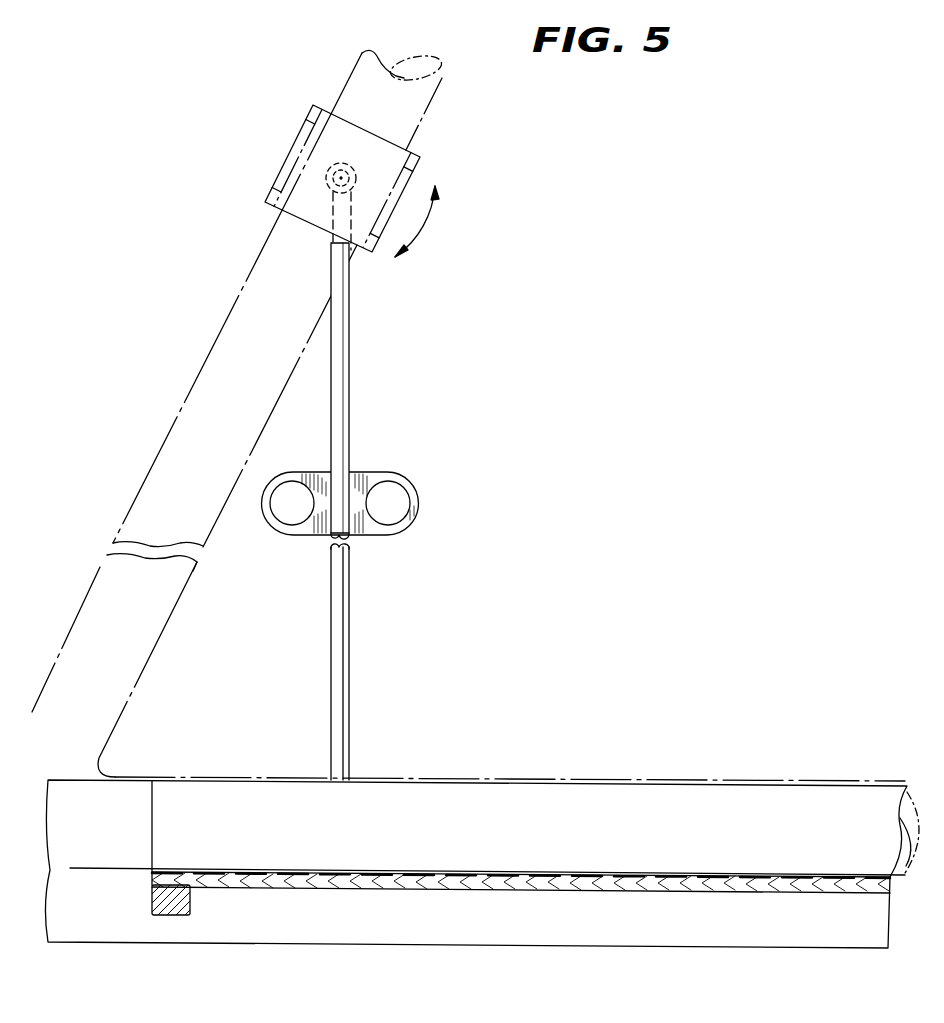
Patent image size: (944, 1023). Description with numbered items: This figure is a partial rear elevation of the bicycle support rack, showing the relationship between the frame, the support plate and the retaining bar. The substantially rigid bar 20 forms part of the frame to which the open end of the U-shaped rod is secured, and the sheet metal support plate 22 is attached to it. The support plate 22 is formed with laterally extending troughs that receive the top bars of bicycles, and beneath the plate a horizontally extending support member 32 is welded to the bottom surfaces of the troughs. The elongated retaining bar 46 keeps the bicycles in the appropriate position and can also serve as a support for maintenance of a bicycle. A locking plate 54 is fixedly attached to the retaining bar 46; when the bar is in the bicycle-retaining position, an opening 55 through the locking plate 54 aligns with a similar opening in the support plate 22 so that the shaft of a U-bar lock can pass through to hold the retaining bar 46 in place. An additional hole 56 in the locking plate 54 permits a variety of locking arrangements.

The bar 20 is at (286, 944).
The support plate 22 is at (458, 892).
The support member 32 is at (191, 908).
The retaining bar 46 is at (350, 640).
The locking plate 54 is at (379, 471).
The opening 55 is at (400, 517).
The hole 56 is at (292, 519).